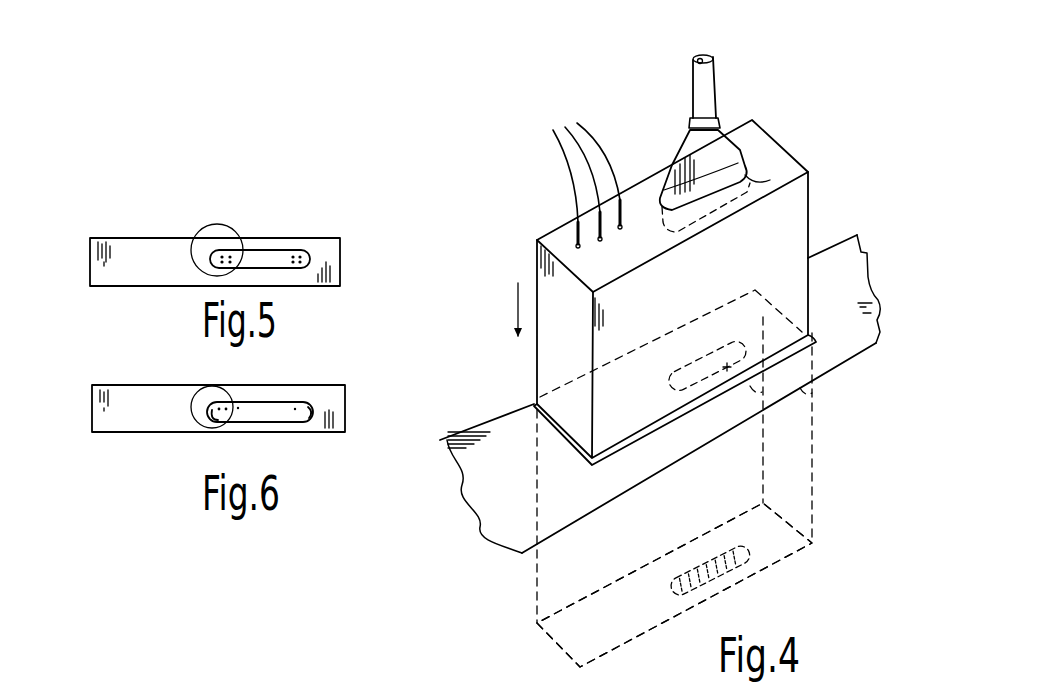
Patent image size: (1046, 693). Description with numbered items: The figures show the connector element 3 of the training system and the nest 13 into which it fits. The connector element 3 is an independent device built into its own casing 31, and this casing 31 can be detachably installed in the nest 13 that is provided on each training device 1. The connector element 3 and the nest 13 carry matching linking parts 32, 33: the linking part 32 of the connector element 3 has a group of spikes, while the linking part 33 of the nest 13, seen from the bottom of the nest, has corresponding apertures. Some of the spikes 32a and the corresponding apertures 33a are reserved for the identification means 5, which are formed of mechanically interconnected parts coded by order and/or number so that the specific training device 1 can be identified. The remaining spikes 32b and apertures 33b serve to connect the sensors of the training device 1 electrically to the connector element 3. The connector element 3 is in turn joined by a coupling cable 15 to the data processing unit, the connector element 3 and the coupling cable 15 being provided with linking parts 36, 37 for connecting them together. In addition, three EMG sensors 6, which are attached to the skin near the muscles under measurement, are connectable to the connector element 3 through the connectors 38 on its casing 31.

In FIG. 4, the training device 1 is at (660, 393).
In FIG. 5, the connector element 3 is at (82, 254).
In FIG. 4, the connector element 3 is at (705, 393).
In FIG. 5, the identification means 5 is at (200, 222).
In FIG. 6, the identification means 5 is at (200, 385).
In FIG. 4, the EMG sensors 6 is at (535, 132).
In FIG. 6, the nest 13 is at (90, 407).
In FIG. 4, the nest 13 is at (812, 450).
In FIG. 4, the coupling cable 15 is at (712, 84).
In FIG. 5, the casing 31 is at (120, 238).
In FIG. 4, the casing 31 is at (798, 272).
In FIG. 5, the linking part 32 is at (275, 252).
In FIG. 4, the linking part 32 is at (813, 395).
In FIG. 5, the spikes 32a is at (222, 250).
In FIG. 5, the spikes 32b is at (300, 254).
In FIG. 6, the linking part 33 is at (285, 402).
In FIG. 4, the linking part 33 is at (757, 578).
In FIG. 6, the apertures 33a is at (214, 425).
In FIG. 6, the apertures 33b is at (314, 420).
In FIG. 4, the linking part 36 is at (712, 142).
In FIG. 4, the linking part 37 is at (793, 167).
In FIG. 4, the connectors 38 is at (590, 249).